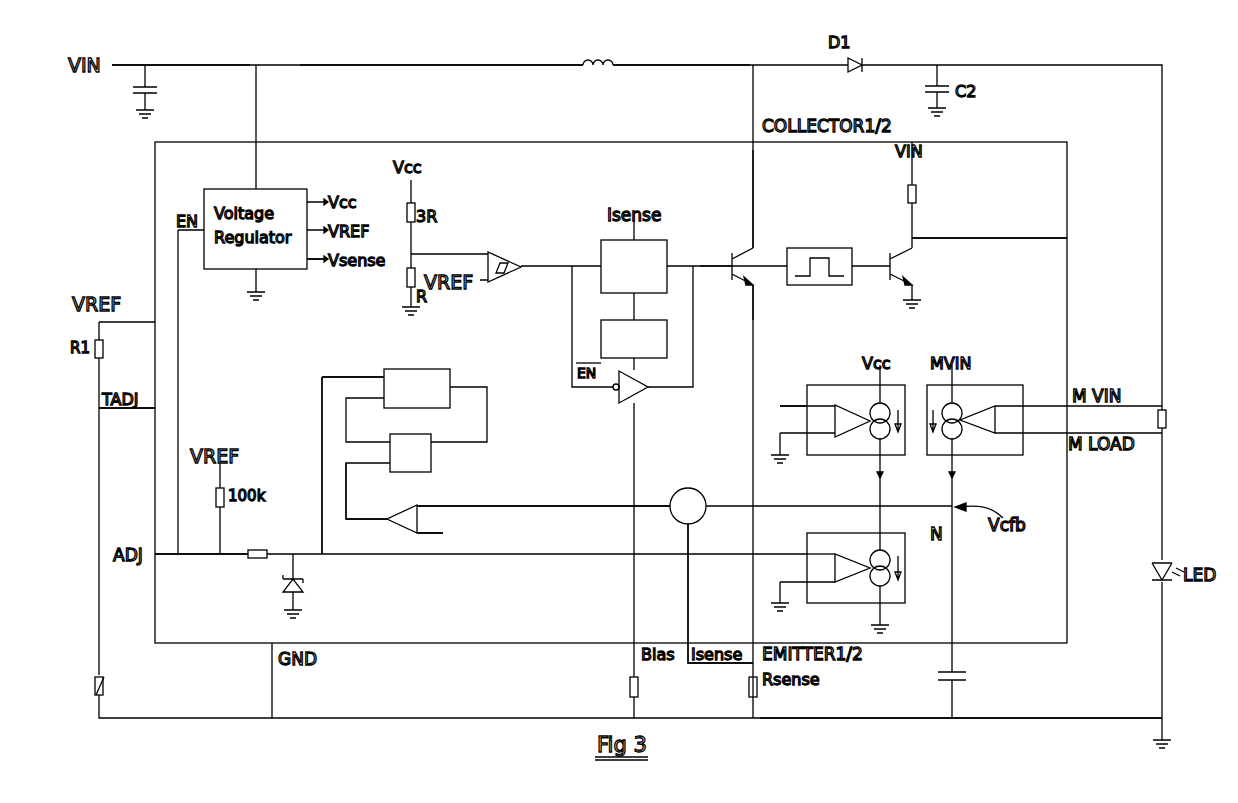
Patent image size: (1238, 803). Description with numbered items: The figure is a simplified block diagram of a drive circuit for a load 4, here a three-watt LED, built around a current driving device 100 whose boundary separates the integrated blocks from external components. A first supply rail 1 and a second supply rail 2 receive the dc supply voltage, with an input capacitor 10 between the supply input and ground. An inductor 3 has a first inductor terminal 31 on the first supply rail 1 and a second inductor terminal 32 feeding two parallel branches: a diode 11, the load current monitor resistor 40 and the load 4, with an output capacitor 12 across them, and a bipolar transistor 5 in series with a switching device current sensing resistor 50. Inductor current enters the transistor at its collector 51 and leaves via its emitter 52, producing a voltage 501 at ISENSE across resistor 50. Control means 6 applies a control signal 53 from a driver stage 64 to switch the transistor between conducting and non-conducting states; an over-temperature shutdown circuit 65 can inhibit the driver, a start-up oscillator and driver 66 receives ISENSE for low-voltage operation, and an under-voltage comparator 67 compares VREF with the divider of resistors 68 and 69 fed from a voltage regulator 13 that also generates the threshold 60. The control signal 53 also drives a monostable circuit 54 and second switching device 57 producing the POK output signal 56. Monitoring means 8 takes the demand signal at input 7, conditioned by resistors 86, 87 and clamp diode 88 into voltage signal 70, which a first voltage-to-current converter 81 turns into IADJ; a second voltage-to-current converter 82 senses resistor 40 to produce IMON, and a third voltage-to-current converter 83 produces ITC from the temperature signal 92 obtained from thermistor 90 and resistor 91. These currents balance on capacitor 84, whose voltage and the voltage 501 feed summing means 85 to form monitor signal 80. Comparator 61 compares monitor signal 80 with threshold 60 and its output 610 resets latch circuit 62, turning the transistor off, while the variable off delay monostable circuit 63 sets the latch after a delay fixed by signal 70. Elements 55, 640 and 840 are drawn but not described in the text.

The first supply rail 1 is at (205, 63).
The second supply rail 2 is at (1030, 720).
The inductor 3 is at (614, 63).
The load 4 is at (1170, 557).
The bipolar transistor 5 is at (752, 248).
The control means 6 is at (305, 347).
The demand signal input 7 is at (165, 556).
The monitoring means 8 is at (732, 437).
The input capacitor 10 is at (130, 92).
The diode 11 is at (862, 62).
The output capacitor 12 is at (940, 87).
The voltage regulator 13 is at (209, 275).
The first inductor terminal 31 is at (478, 63).
The second inductor terminal 32 is at (677, 72).
The load current monitor resistor 40 is at (1165, 410).
The switching device current sensing resistor 50 is at (757, 697).
The collector 51 is at (753, 198).
The emitter 52 is at (755, 290).
The control signal 53 is at (720, 262).
The monostable circuit 54 is at (840, 248).
The resistor 55 is at (908, 195).
The output signal 56 is at (985, 238).
The second switching device 57 is at (898, 266).
The predetermined threshold 60 is at (311, 259).
The comparator 61 is at (397, 526).
The latch circuit 62 is at (431, 463).
The variable off delay monostable circuit 63 is at (440, 368).
The driver stage 64 is at (640, 400).
The over-temperature shutdown circuit 65 is at (613, 320).
The start-up oscillator and driver 66 is at (665, 238).
The under-voltage comparator 67 is at (508, 258).
The resistor 68 is at (408, 207).
The resistor 69 is at (405, 282).
The voltage signal 70 is at (347, 377).
The monitor signal 80 is at (545, 505).
The first voltage-to-current converter 81 is at (905, 568).
The second voltage-to-current converter 82 is at (1008, 385).
The third voltage-to-current converter 83 is at (822, 385).
The capacitor 84 is at (936, 677).
The summing means 85 is at (700, 492).
The resistor 86 is at (226, 490).
The resistor 87 is at (265, 552).
The over-voltage clamp diode 88 is at (283, 585).
The thermistor 90 is at (97, 675).
The resistor 91 is at (97, 342).
The temperature signal 92 is at (127, 409).
The current driving device 100 is at (410, 645).
The voltage 501 is at (686, 572).
The comparator output 610 is at (347, 488).
The bias resistor 640 is at (630, 690).
The line 840 is at (688, 572).